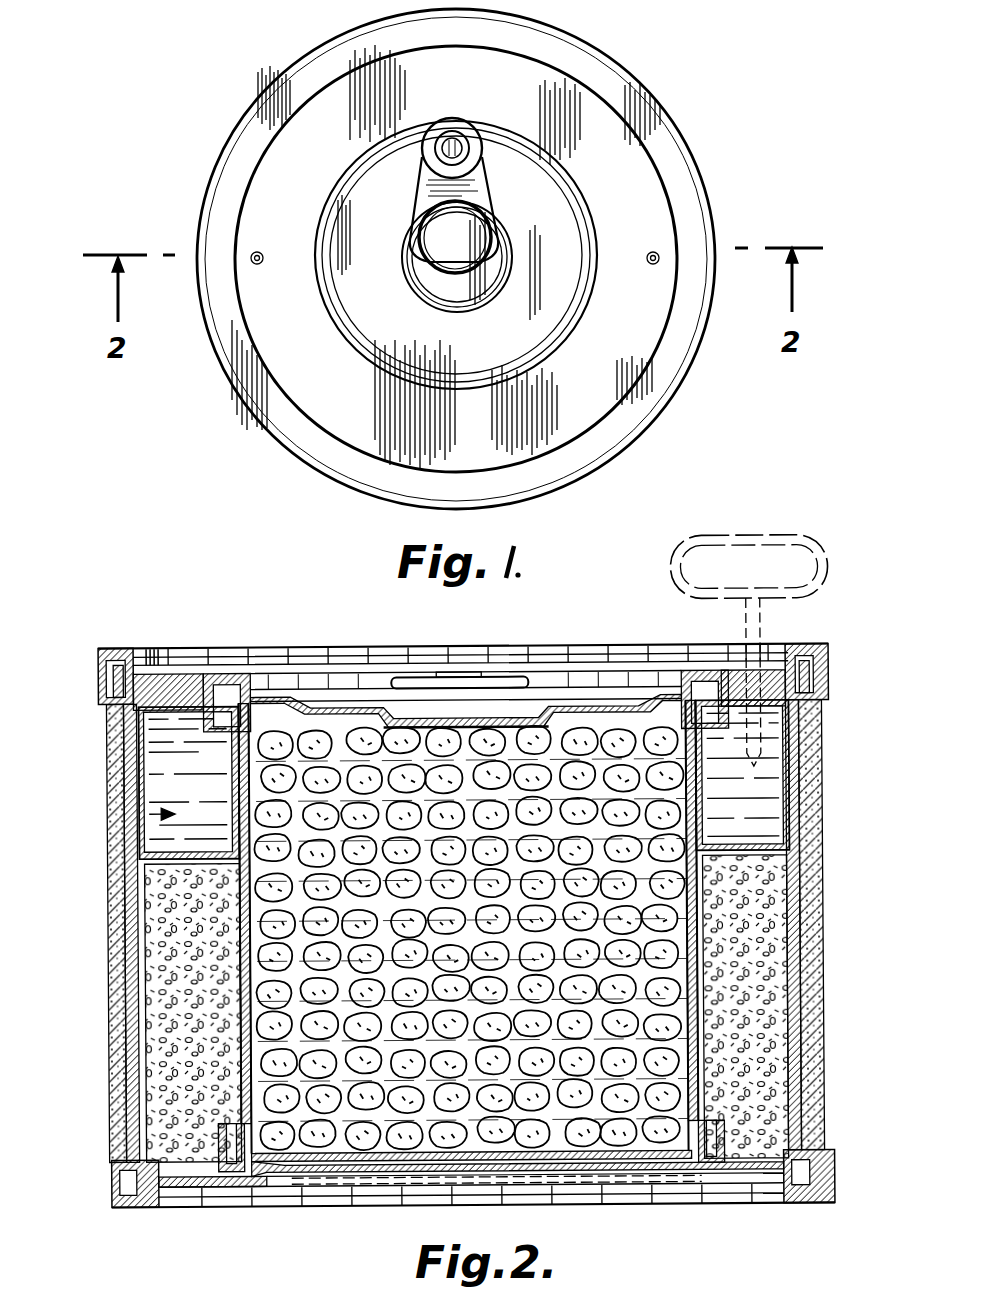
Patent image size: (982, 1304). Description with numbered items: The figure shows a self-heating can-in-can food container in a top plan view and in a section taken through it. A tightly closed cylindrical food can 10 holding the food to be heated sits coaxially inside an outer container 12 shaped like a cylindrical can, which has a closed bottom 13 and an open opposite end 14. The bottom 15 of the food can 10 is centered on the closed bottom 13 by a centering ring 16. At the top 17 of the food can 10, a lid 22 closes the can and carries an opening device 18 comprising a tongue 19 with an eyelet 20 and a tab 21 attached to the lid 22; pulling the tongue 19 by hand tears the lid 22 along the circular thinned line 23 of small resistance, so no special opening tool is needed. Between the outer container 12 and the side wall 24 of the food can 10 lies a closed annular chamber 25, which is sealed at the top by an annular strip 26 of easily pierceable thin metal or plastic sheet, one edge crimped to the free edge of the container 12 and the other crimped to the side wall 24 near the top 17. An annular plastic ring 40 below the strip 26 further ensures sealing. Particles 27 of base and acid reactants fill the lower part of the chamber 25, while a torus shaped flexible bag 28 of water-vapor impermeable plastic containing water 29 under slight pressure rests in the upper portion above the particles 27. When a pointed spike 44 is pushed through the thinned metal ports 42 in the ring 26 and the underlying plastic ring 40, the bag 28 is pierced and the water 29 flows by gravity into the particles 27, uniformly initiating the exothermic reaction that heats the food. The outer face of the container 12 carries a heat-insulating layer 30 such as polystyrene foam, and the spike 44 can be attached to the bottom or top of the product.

In FIG. 1, the food can 10 is at (293, 61).
In FIG. 2, the food can 10 is at (826, 670).
In FIG. 1, the outer container 12 is at (655, 438).
In FIG. 2, the outer container 12 is at (100, 652).
In FIG. 2, the closed bottom 13 is at (325, 1180).
In FIG. 2, the open end 14 is at (555, 722).
In FIG. 2, the bottom of the food can 15 is at (625, 1168).
In FIG. 1, the centering ring 16 is at (490, 122).
In FIG. 2, the top of the food can 17 is at (620, 668).
In FIG. 1, the opening device 18 is at (500, 212).
In FIG. 2, the opening device 18 is at (503, 677).
In FIG. 1, the tongue 19 is at (401, 256).
In FIG. 1, the eyelet 20 is at (435, 232).
In FIG. 1, the tab 21 is at (455, 140).
In FIG. 2, the lid 22 is at (357, 710).
In FIG. 1, the thinned line 23 is at (358, 357).
In FIG. 2, the thinned line 23 is at (280, 690).
In FIG. 2, the side wall 24 is at (142, 830).
In FIG. 2, the annular chamber 25 is at (150, 812).
In FIG. 2, the annular strip 26 is at (210, 670).
In FIG. 2, the reactant particles 27 is at (825, 960).
In FIG. 2, the torus shaped bag 28 is at (825, 822).
In FIG. 2, the water 29 is at (768, 782).
In FIG. 2, the heat-insulating layer 30 is at (108, 752).
In FIG. 2, the annular plastic ring 40 is at (826, 713).
In FIG. 1, the thinned metal ports 42 is at (258, 265).
In FIG. 2, the thinned metal ports 42 is at (156, 662).
In FIG. 2, the spike 44 is at (765, 530).